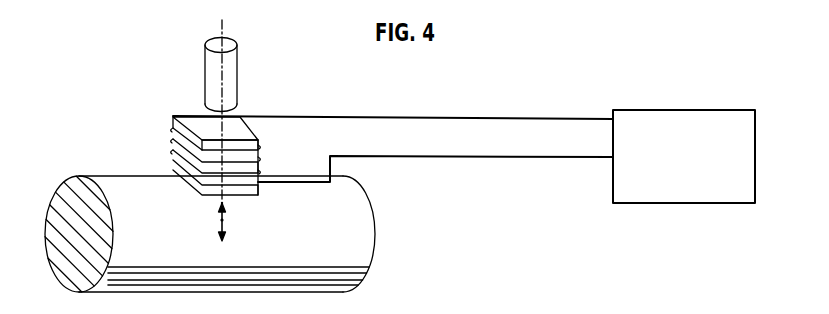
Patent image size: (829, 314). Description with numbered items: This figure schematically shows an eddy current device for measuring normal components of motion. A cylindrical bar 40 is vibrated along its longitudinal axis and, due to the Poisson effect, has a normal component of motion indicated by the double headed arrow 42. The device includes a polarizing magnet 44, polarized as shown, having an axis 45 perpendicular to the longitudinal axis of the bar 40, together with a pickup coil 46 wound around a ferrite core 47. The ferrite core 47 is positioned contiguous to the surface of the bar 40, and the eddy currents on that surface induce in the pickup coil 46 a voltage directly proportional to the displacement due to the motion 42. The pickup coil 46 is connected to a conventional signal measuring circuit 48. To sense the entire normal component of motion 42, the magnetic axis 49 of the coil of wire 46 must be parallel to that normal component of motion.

The cylindrical bar 40 is at (356, 226).
The double headed arrow 42 is at (225, 220).
The polarizing magnet 44 is at (212, 63).
The axis 45 is at (223, 30).
The pickup coil 46 is at (241, 159).
The ferrite core 47 is at (201, 111).
The signal measuring circuit 48 is at (685, 197).
The magnetic axis 49 is at (262, 112).